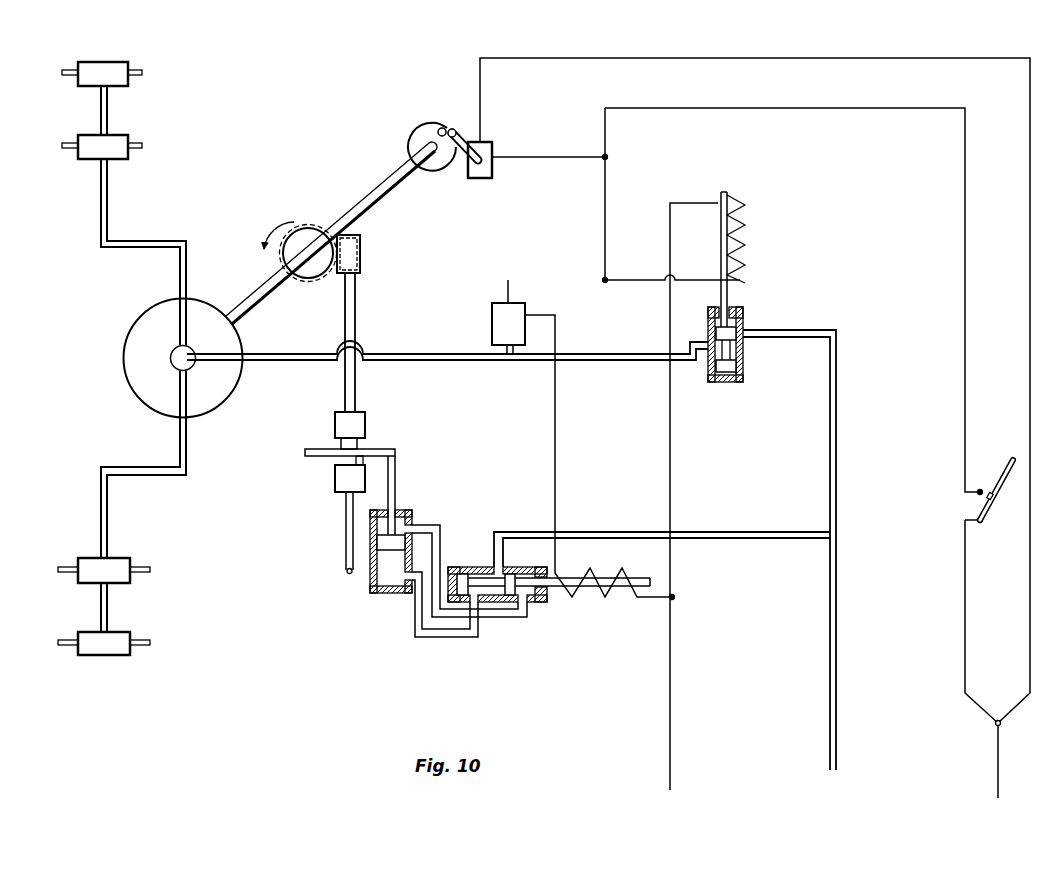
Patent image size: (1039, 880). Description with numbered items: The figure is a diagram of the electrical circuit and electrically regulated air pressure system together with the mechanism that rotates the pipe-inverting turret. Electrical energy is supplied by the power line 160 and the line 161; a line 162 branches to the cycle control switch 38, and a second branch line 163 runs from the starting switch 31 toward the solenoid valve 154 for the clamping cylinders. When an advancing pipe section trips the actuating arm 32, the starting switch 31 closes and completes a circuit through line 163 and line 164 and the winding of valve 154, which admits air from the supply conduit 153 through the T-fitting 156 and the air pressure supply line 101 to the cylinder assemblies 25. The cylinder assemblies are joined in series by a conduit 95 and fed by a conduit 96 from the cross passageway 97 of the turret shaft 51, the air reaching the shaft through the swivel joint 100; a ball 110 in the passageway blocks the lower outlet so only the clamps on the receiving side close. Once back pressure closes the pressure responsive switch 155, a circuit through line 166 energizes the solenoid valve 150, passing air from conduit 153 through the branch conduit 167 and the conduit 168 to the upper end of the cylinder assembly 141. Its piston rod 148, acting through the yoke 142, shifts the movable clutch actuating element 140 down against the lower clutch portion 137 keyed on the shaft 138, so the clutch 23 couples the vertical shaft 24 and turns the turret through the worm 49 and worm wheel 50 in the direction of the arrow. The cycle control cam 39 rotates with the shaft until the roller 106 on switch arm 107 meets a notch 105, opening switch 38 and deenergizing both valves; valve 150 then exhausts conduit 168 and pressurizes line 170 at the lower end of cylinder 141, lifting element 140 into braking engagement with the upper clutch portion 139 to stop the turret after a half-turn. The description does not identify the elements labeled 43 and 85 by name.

The clutch 23 is at (370, 416).
The vertical shaft 24 is at (345, 385).
The cylinder assemblies 25 is at (97, 60).
The starting switch 31 is at (981, 488).
The actuating arm 32 is at (1004, 482).
The cycle control switch 38 is at (492, 155).
The cycle control cam 39 is at (414, 141).
The wheel 43 is at (124, 358).
The worm 49 is at (362, 256).
The worm wheel 50 is at (308, 224).
The turret shaft 51 is at (374, 198).
The gearbox 85 is at (132, 143).
The conduit 95 is at (107, 108).
The conduit 96 is at (107, 211).
The cross passageway 97 is at (186, 316).
The swivel joint 100 is at (192, 370).
The air pressure supply line 101 is at (286, 354).
The notches 105 is at (441, 128).
The roller 106 is at (456, 126).
The switch arm 107 is at (462, 162).
The ball 110 is at (181, 410).
The lower clutch portion 137 is at (335, 482).
The shaft 138 is at (345, 543).
The upper clutch portion 139 is at (335, 426).
The movable clutch actuating element 140 is at (356, 443).
The cylinder assembly 141 is at (370, 586).
The yoke 142 is at (308, 456).
The piston rod 148 is at (395, 490).
The solenoid valve 150 is at (540, 602).
The air pressure supply conduit 153 is at (836, 590).
The solenoid valve 154 is at (743, 318).
The pressure responsive switch 155 is at (492, 322).
The T-fitting 156 is at (610, 354).
The power line 160 is at (676, 441).
The line 161 is at (998, 766).
The line 162 is at (480, 108).
The second branch line 163 is at (605, 225).
The line 164 is at (647, 279).
The line 166 is at (555, 418).
The branch conduit 167 is at (718, 530).
The conduit 168 is at (442, 559).
The line 170 is at (463, 637).